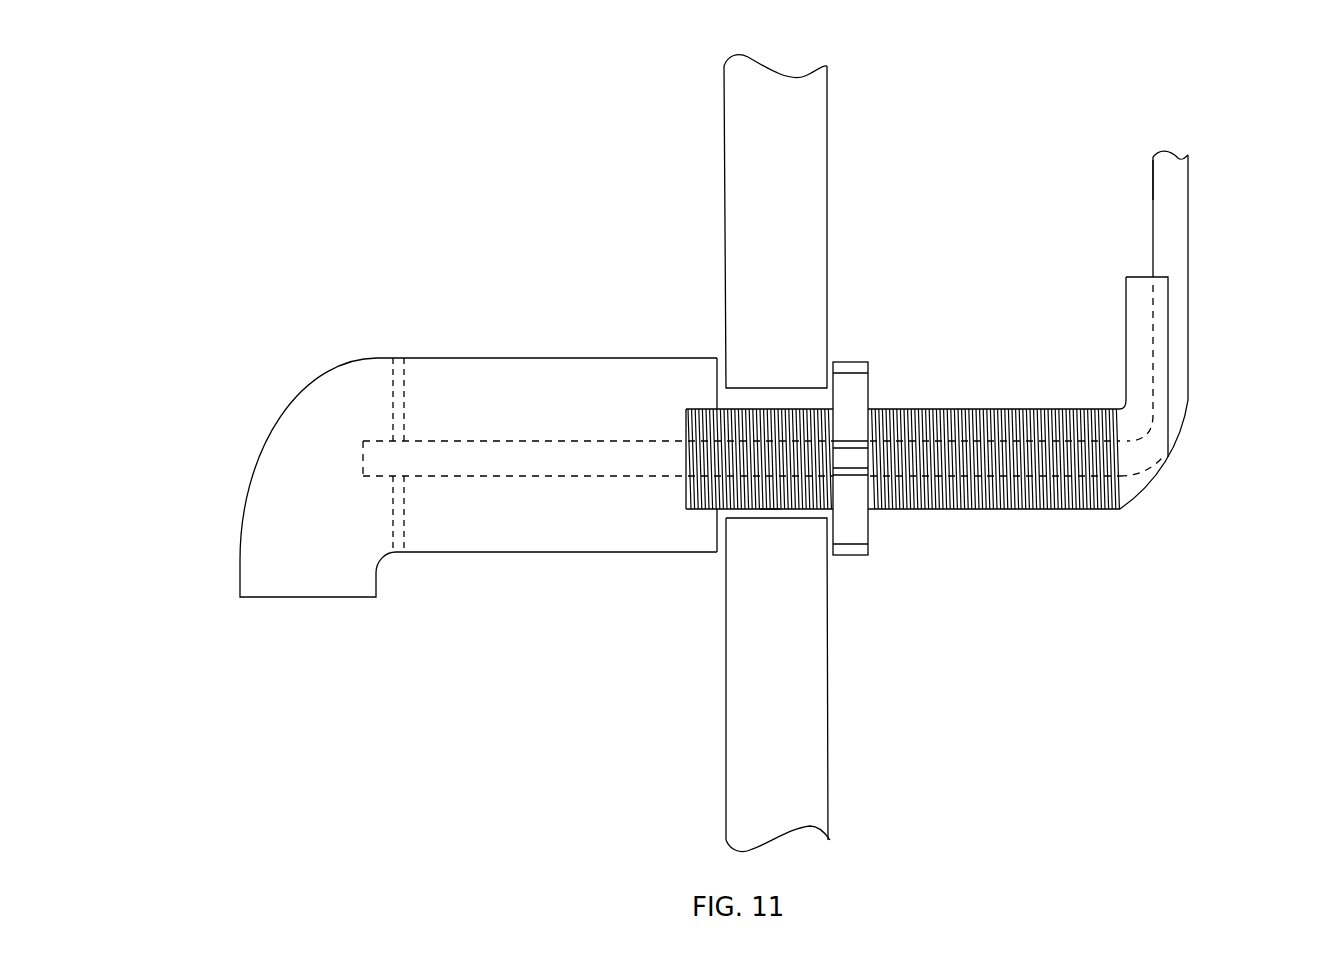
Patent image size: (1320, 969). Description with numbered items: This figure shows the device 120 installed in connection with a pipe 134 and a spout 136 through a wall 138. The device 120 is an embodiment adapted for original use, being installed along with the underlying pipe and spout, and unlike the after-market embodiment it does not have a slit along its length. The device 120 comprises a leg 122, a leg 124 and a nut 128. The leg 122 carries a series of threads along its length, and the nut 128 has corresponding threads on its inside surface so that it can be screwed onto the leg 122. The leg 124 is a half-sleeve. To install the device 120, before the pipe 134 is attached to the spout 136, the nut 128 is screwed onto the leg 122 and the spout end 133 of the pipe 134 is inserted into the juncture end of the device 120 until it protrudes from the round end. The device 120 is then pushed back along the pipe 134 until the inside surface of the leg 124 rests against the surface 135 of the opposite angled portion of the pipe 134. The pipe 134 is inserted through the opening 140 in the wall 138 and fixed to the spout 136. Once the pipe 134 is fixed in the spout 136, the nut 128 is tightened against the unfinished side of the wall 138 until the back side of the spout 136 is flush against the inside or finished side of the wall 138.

The device 120 is at (1120, 509).
The leg 122 is at (1008, 500).
The leg 124 is at (1126, 305).
The nut 128 is at (868, 392).
The spout end 133 is at (363, 462).
The pipe 134 is at (1188, 180).
The surface 135 is at (1153, 168).
The spout 136 is at (495, 552).
The wall 138 is at (828, 141).
The opening 140 is at (770, 500).